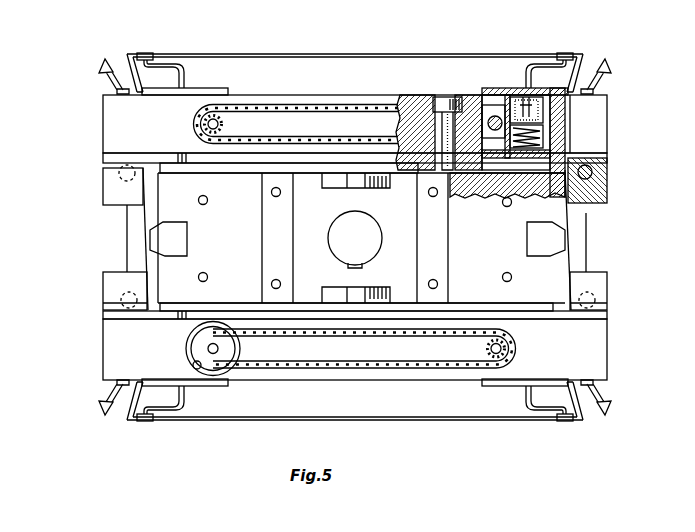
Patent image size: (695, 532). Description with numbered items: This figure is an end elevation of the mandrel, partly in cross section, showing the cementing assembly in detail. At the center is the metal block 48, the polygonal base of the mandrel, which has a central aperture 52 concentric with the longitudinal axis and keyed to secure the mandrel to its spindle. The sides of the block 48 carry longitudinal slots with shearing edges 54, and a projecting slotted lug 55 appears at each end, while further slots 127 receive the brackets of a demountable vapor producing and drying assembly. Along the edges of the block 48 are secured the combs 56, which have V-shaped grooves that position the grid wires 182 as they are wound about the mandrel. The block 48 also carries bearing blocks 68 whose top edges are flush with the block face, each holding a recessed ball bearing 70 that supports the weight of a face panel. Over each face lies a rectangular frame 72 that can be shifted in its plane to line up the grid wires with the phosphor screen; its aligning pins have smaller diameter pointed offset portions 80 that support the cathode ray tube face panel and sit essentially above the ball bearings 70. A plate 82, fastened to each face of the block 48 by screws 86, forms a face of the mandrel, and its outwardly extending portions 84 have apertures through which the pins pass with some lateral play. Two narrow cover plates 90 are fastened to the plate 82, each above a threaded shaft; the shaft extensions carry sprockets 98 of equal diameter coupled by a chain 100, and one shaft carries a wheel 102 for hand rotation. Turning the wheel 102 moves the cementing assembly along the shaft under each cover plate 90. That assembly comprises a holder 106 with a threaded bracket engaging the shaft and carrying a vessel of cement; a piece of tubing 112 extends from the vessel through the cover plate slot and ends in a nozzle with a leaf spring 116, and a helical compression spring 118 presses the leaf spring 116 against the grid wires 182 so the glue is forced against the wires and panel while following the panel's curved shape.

The metal block 48 is at (252, 213).
The central aperture 52 is at (374, 255).
The shearing edges 54 is at (150, 249).
The slotted lug 55 is at (330, 183).
The combs 56 is at (133, 63).
The bearing blocks 68 is at (608, 190).
The ball bearing 70 is at (588, 163).
The rectangular frame 72 is at (608, 157).
The offset portions 80 is at (104, 71).
The plate 82 is at (405, 100).
The outwardly extending portions 84 is at (600, 110).
The screws 86 is at (440, 98).
The cover plates 90 is at (207, 88).
The sprockets 98 is at (233, 131).
The chain 100 is at (323, 105).
The wheel 102 is at (195, 349).
The holder 106 is at (520, 98).
The tubing 112 is at (545, 66).
The leaf spring 116 is at (572, 55).
The helical compression spring 118 is at (517, 135).
The slots 127 is at (260, 241).
The grid wires 182 is at (258, 55).